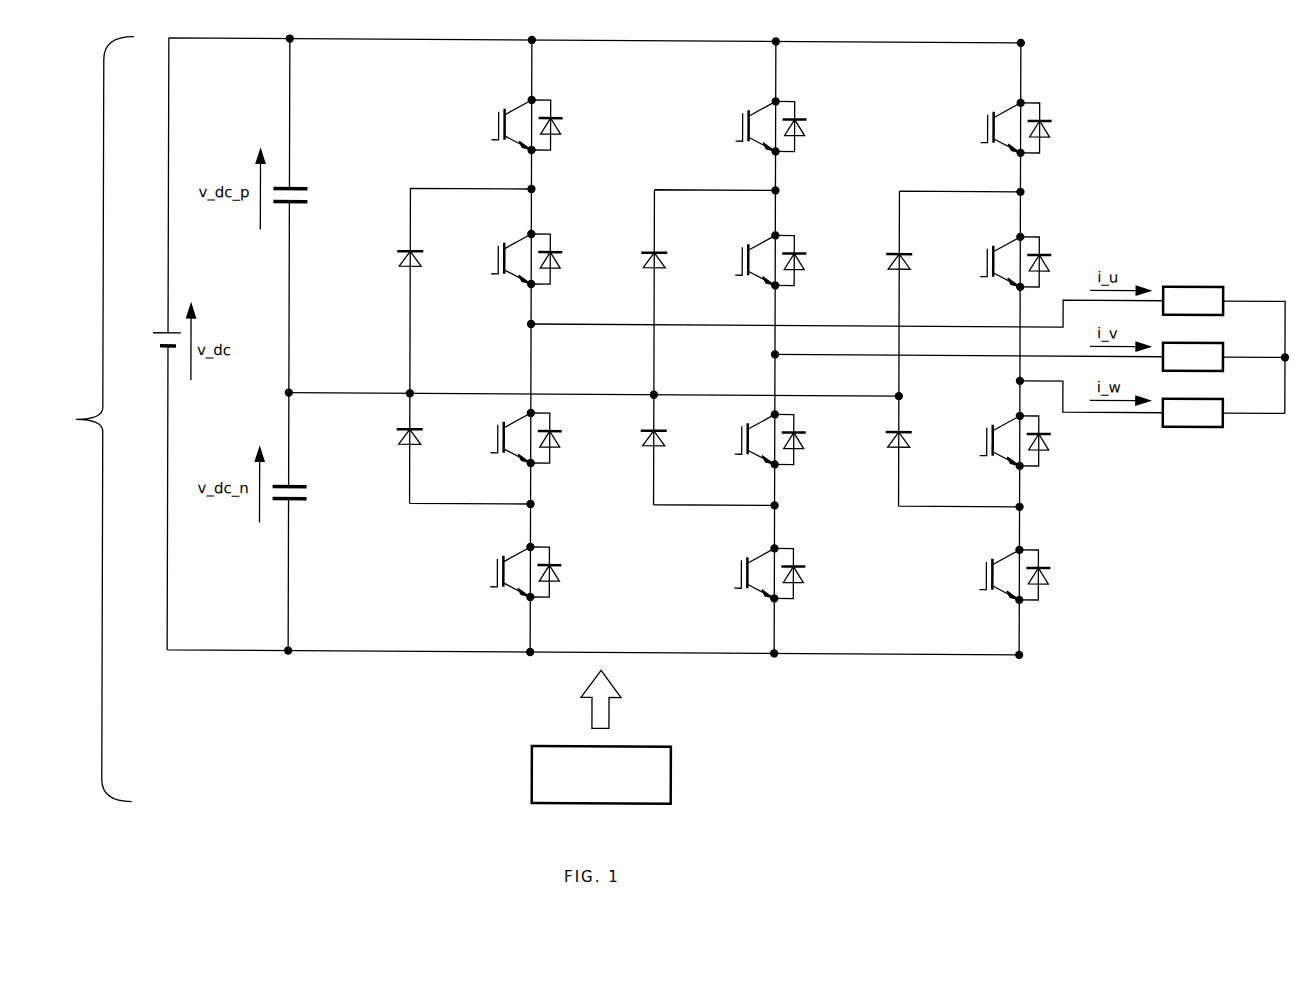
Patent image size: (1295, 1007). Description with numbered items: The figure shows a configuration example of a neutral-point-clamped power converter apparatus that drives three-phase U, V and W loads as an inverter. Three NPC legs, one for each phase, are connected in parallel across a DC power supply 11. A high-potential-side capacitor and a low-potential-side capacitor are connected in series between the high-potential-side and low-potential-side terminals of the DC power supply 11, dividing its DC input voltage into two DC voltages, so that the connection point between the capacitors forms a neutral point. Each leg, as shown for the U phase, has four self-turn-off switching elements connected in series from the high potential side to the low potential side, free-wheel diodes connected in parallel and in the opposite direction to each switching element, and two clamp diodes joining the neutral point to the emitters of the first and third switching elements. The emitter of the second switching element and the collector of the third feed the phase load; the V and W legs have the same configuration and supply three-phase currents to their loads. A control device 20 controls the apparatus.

The DC power supply 11 is at (159, 334).
The control device 20 is at (673, 776).